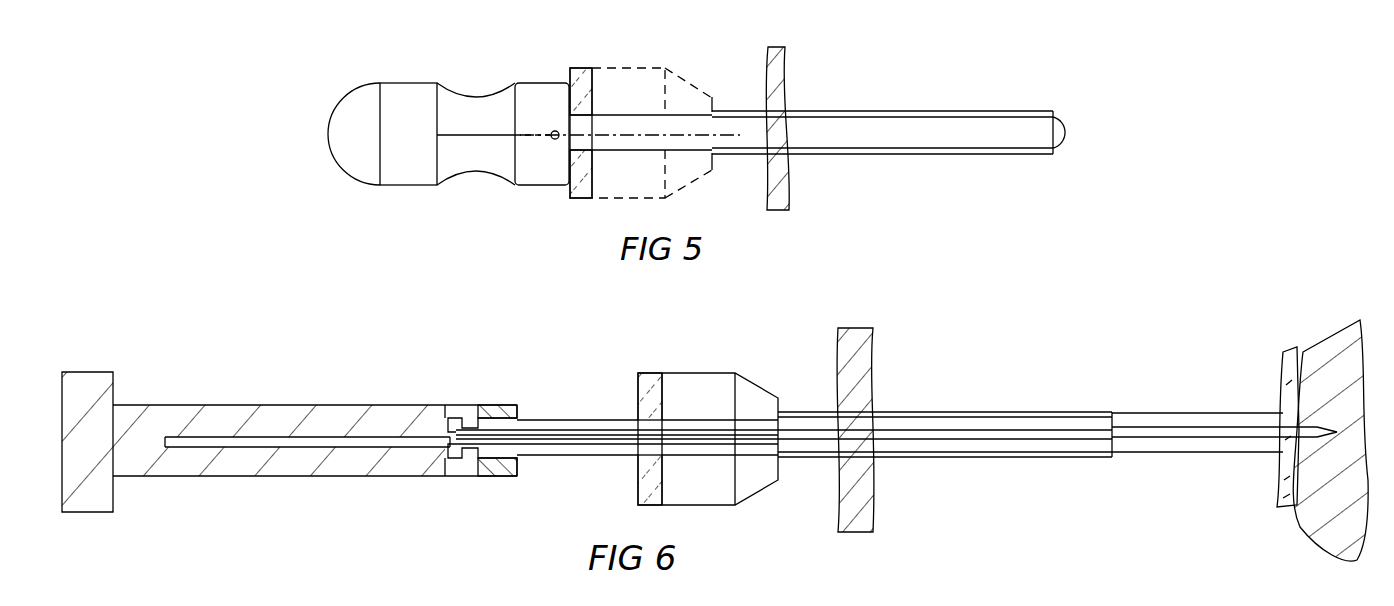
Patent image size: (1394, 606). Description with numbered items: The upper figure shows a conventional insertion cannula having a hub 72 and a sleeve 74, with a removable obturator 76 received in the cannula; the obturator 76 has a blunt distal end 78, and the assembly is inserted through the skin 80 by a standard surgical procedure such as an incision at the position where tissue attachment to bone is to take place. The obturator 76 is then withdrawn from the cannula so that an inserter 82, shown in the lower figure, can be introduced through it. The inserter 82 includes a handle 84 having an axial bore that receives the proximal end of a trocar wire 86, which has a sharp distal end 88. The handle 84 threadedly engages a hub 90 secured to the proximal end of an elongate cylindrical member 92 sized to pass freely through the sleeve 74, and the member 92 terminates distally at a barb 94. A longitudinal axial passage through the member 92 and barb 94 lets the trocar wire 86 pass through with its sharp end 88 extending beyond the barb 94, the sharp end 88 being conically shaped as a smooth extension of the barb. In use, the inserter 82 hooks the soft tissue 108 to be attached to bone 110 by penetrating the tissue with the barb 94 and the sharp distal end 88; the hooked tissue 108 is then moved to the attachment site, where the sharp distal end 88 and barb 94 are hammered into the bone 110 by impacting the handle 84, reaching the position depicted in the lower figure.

In FIG. 5, the hub 72 is at (633, 68).
In FIG. 5, the sleeve 74 is at (905, 110).
In FIG. 5, the obturator 76 is at (402, 185).
In FIG. 5, the blunt distal end 78 is at (1070, 128).
In FIG. 5, the skin 80 is at (772, 60).
In FIG. 6, the inserter 82 is at (411, 489).
In FIG. 6, the handle 84 is at (132, 477).
In FIG. 6, the trocar wire 86 is at (378, 435).
In FIG. 6, the sharp distal end 88 is at (1336, 435).
In FIG. 6, the hub 90 is at (492, 405).
In FIG. 6, the elongate cylindrical member 92 is at (1187, 412).
In FIG. 6, the barb 94 is at (1332, 425).
In FIG. 6, the soft tissue 108 is at (1275, 498).
In FIG. 6, the bone 110 is at (1322, 345).